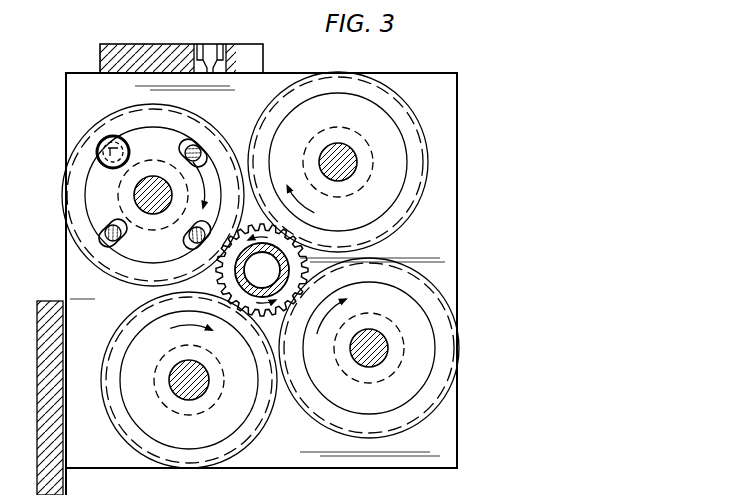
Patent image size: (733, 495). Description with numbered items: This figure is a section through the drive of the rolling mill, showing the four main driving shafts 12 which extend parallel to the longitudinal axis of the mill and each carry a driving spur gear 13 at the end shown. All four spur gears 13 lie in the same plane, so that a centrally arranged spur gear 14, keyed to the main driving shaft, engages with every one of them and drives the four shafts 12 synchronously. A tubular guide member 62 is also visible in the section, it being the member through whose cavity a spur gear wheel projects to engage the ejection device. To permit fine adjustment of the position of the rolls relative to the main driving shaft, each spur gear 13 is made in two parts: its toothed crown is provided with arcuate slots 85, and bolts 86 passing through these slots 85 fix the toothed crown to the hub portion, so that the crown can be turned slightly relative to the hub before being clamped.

The driving shaft 12 is at (155, 178).
The spur gear 13 is at (73, 197).
The central spur gear 14 is at (153, 195).
The tubular guide member 62 is at (252, 305).
The arcuate slots 85 is at (97, 234).
The bolts 86 is at (97, 152).